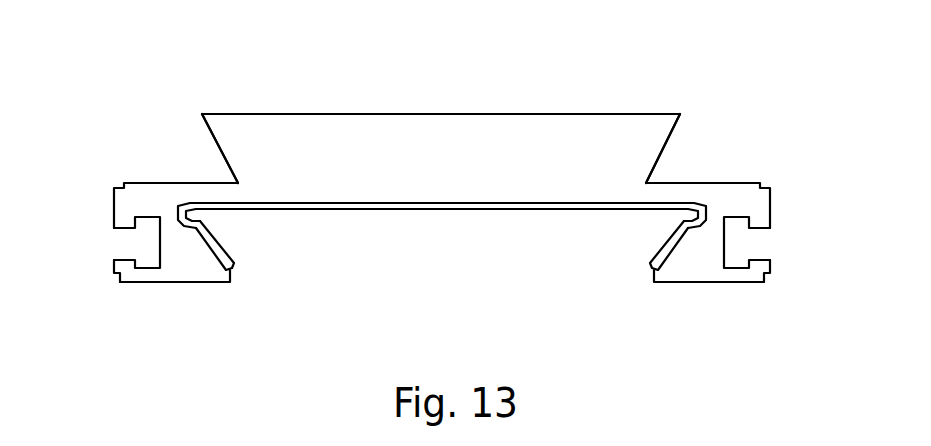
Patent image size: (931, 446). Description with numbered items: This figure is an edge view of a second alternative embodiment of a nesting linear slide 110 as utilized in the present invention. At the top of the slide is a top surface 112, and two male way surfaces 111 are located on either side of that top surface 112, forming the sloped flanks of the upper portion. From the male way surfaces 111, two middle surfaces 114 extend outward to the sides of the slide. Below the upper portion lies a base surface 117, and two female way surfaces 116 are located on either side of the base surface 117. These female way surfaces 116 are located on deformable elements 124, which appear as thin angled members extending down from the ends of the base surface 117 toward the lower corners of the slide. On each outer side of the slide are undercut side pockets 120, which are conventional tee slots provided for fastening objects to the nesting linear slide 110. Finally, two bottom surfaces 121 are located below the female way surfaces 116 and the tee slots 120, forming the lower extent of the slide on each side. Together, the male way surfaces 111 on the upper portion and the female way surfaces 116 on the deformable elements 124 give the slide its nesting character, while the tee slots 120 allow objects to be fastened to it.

The nesting linear slide 110 is at (347, 75).
The male way surfaces 111 is at (217, 149).
The top surface 112 is at (570, 113).
The middle surfaces 114 is at (150, 183).
The female way surfaces 116 is at (215, 236).
The base surface 117 is at (498, 207).
The undercut side pockets 120 is at (160, 245).
The bottom surfaces 121 is at (163, 285).
The deformable elements 124 is at (222, 246).